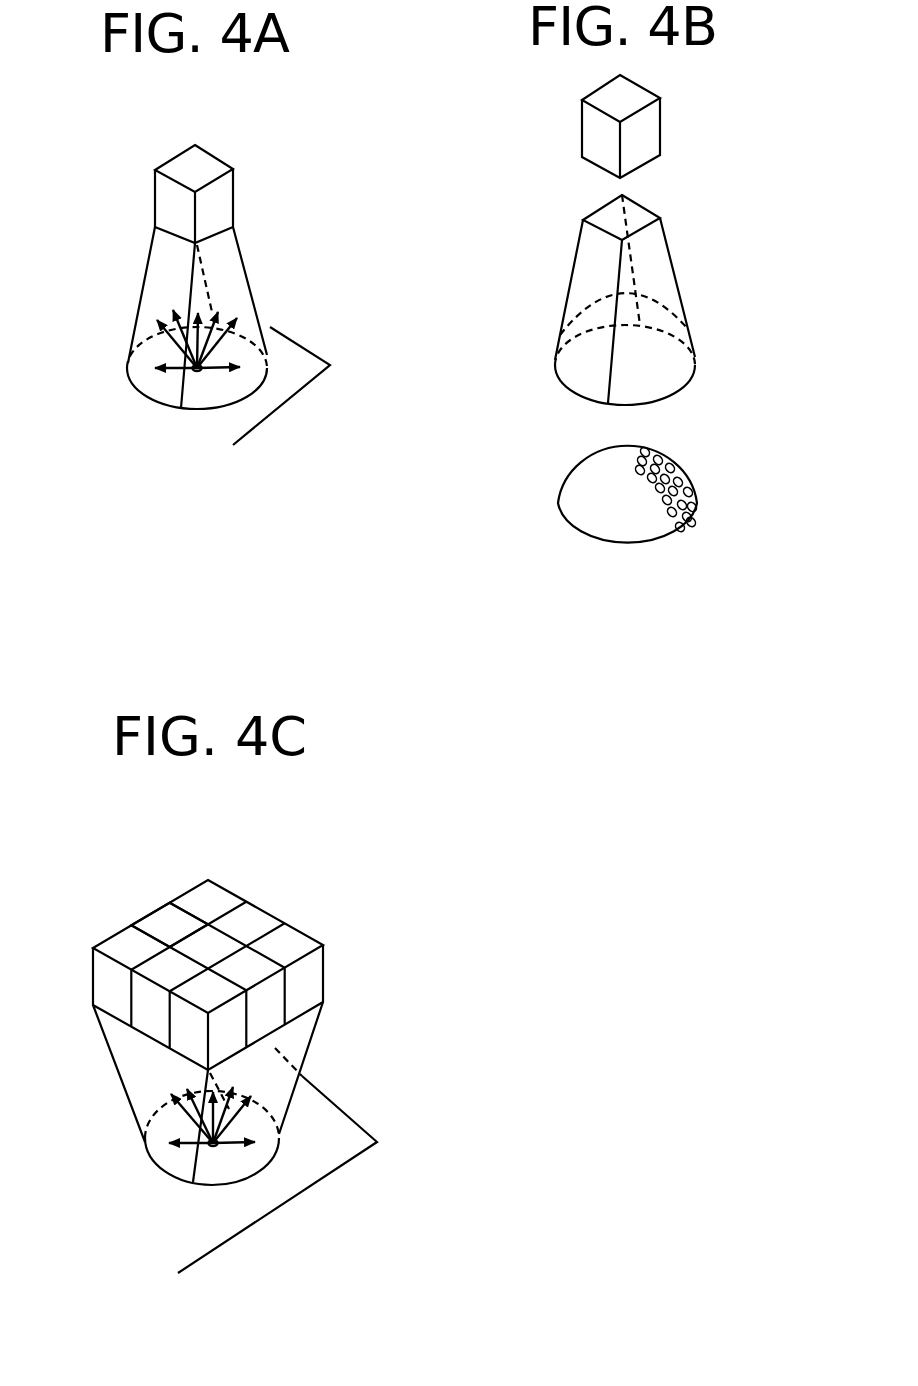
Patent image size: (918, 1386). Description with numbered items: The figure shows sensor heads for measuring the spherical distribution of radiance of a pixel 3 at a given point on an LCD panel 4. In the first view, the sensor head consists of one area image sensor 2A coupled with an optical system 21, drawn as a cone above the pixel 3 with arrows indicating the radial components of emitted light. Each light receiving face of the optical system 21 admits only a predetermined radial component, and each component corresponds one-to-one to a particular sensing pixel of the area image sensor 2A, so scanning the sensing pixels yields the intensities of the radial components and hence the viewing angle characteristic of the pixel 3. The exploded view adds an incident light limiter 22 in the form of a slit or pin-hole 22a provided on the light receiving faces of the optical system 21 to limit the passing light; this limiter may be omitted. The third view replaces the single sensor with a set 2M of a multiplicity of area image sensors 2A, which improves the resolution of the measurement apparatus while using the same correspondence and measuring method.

In FIG. 4A, the area image sensor 2A is at (228, 203).
In FIG. 4B, the area image sensor 2A is at (653, 133).
In FIG. 4C, the area image sensor 2A is at (165, 920).
In FIG. 4C, the set of area image sensors 2M is at (319, 917).
In FIG. 4A, the optical system 21 is at (153, 282).
In FIG. 4B, the optical system 21 is at (585, 277).
In FIG. 4C, the optical system 21 is at (133, 1073).
In FIG. 4B, the incident light limiter 22 is at (583, 472).
In FIG. 4B, the pin-hole 22a is at (678, 465).
In FIG. 4A, the pixel 3 is at (200, 372).
In FIG. 4C, the pixel 3 is at (216, 1147).
In FIG. 4A, the LCD panel 4 is at (293, 357).
In FIG. 4C, the LCD panel 4 is at (330, 1123).